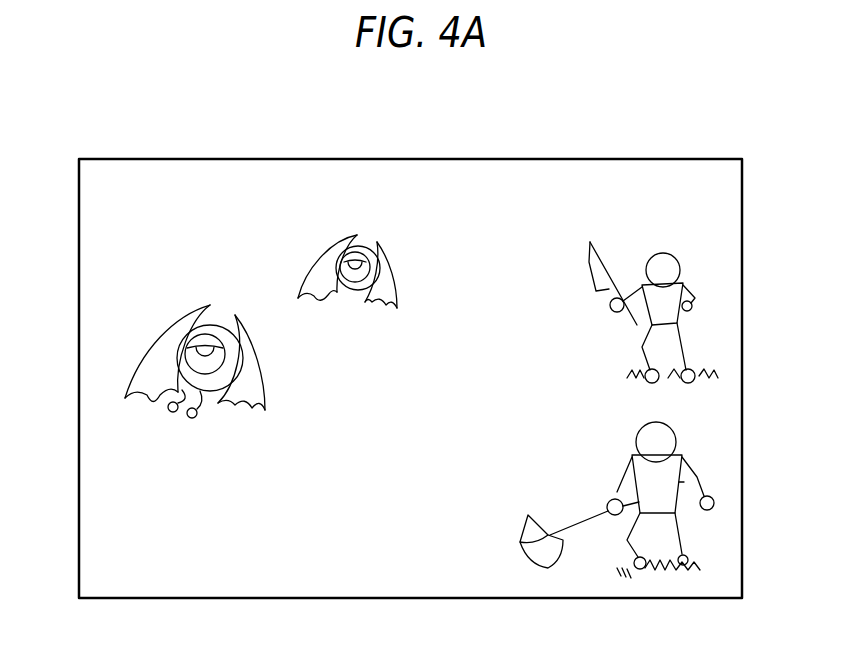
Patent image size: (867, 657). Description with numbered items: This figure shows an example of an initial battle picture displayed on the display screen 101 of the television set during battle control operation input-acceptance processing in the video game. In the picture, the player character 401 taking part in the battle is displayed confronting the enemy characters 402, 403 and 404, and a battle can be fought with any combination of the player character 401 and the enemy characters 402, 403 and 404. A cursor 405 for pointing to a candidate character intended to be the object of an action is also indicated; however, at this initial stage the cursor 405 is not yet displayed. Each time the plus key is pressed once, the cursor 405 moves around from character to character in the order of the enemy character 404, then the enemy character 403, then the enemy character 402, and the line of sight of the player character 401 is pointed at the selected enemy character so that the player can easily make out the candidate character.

The display screen 101 is at (593, 154).
The player character 401 is at (680, 528).
The enemy character 402 is at (680, 262).
The enemy character 403 is at (380, 246).
The enemy character 404 is at (133, 372).
The cursor 405 is at (112, 347).